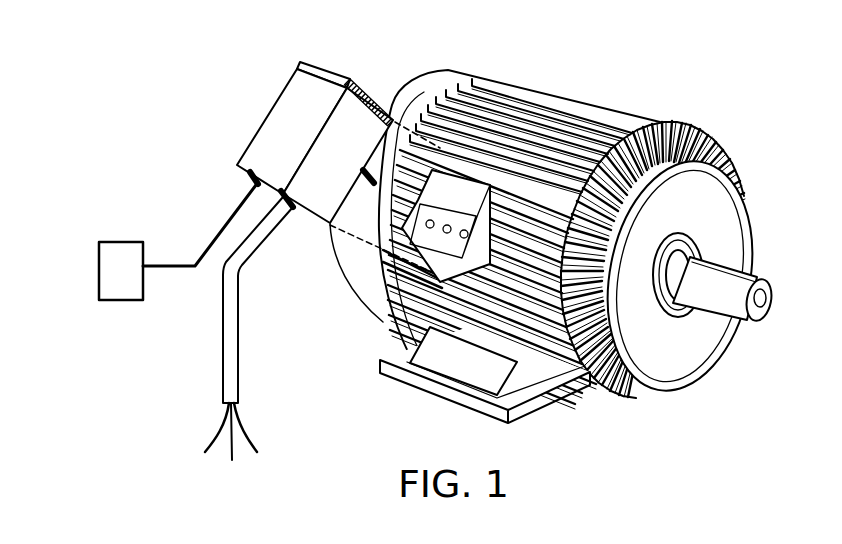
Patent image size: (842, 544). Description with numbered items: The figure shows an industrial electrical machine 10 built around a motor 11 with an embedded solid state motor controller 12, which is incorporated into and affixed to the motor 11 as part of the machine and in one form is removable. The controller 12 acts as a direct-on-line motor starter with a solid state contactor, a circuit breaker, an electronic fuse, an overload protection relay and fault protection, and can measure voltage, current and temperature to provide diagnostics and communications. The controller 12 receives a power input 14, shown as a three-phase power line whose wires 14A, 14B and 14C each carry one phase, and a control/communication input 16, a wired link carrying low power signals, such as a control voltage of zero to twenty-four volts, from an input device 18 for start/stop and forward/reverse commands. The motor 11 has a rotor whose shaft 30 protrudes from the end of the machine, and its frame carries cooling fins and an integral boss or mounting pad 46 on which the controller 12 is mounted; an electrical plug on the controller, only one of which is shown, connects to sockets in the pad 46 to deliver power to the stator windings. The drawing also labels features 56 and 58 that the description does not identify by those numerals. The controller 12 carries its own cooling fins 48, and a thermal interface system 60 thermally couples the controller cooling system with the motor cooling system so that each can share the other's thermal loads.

The electrical machine 10 is at (405, 271).
The motor 11 is at (620, 108).
The solid state motor controller 12 is at (315, 157).
The power input 14 is at (226, 360).
The wire 14A is at (205, 438).
The wire 14B is at (232, 462).
The wire 14C is at (256, 438).
The control/communication input 16 is at (170, 262).
The input device 18 is at (98, 264).
The shaft 30 is at (720, 300).
The mounting pad 46 is at (433, 322).
The cooling fins 48 is at (372, 85).
The cable gland 56 is at (368, 185).
The sensor cable 58 is at (383, 320).
The thermal interface system 60 is at (452, 173).